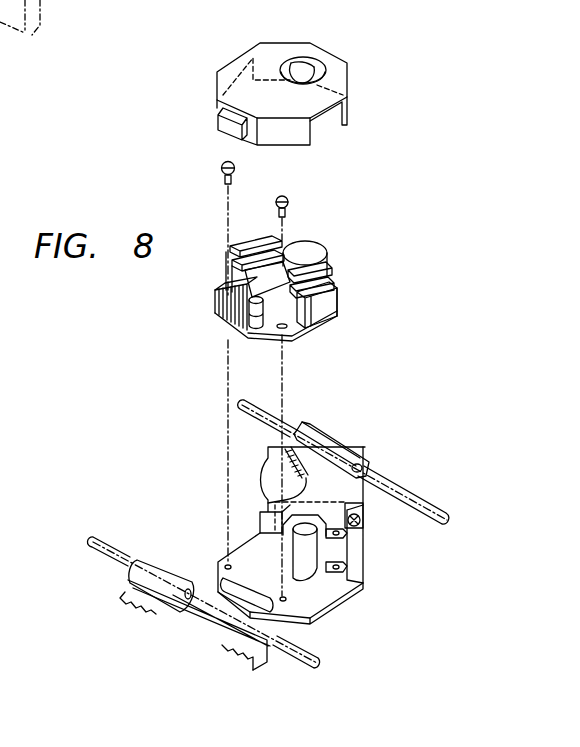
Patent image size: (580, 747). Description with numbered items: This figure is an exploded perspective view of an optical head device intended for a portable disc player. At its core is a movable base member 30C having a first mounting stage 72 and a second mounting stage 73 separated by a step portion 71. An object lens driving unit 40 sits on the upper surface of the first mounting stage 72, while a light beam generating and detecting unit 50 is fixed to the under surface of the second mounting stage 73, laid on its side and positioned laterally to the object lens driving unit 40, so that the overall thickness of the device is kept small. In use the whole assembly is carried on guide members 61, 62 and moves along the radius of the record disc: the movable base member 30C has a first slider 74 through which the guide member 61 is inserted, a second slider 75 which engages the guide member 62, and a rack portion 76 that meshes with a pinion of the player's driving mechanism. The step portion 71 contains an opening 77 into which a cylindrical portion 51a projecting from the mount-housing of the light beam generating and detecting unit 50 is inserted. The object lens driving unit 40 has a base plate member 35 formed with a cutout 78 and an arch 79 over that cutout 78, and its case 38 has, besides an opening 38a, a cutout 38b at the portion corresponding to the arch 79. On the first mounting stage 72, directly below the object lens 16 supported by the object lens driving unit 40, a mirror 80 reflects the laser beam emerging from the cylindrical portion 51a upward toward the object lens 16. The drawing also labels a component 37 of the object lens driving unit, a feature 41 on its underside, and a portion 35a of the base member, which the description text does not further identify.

The case 38 is at (357, 62).
The opening 38a is at (315, 62).
The cutout 38b is at (290, 68).
The object lens driving unit 40 is at (407, 203).
The object lens 16 is at (315, 247).
The drive unit housing 37 is at (345, 310).
The slot 41 is at (295, 323).
The light beam generating and detecting unit 50 is at (290, 457).
The first slider 74 is at (352, 442).
The guide member 61 is at (397, 487).
The opening 77 is at (313, 503).
The step portion 71 is at (263, 517).
The second mounting stage 73 is at (342, 487).
The arch 79 is at (345, 536).
The cutout 78 is at (296, 547).
The base plate member 35 is at (226, 563).
The mounting lug 35a is at (346, 565).
The first mounting stage 72 is at (357, 568).
The mirror 80 is at (307, 565).
The cylindrical portion 51a is at (308, 533).
The movable base member 30C is at (352, 608).
The second slider 75 is at (143, 562).
The rack portion 76 is at (230, 648).
The guide member 62 is at (285, 655).